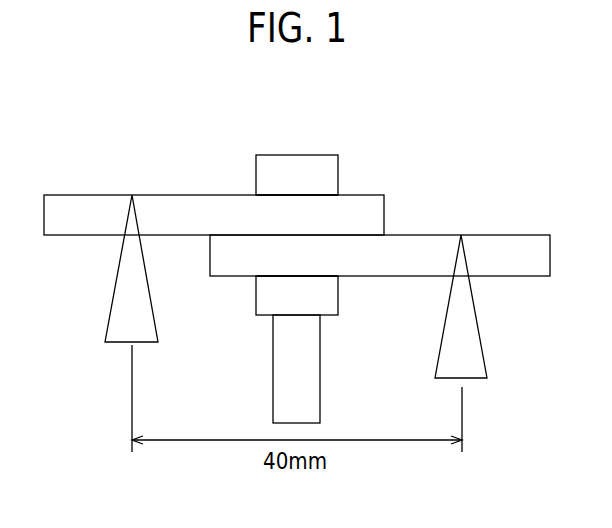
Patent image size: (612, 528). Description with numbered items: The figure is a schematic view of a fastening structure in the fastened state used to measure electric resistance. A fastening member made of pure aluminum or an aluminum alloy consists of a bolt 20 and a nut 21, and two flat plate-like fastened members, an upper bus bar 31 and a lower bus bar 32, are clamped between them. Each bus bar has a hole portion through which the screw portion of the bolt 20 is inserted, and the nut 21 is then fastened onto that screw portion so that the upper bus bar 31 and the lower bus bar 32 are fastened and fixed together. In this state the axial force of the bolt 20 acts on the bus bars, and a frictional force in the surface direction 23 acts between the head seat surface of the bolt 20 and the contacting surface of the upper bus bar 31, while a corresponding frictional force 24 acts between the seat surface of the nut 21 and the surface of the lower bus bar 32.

The bolt 20 is at (303, 157).
The nut 21 is at (258, 302).
The frictional force between bolt head seat surface and upper bus bar 23 is at (310, 194).
The frictional force between nut seat surface and lower bus bar 24 is at (298, 276).
The upper bus bar 31 is at (75, 208).
The lower bus bar 32 is at (516, 247).